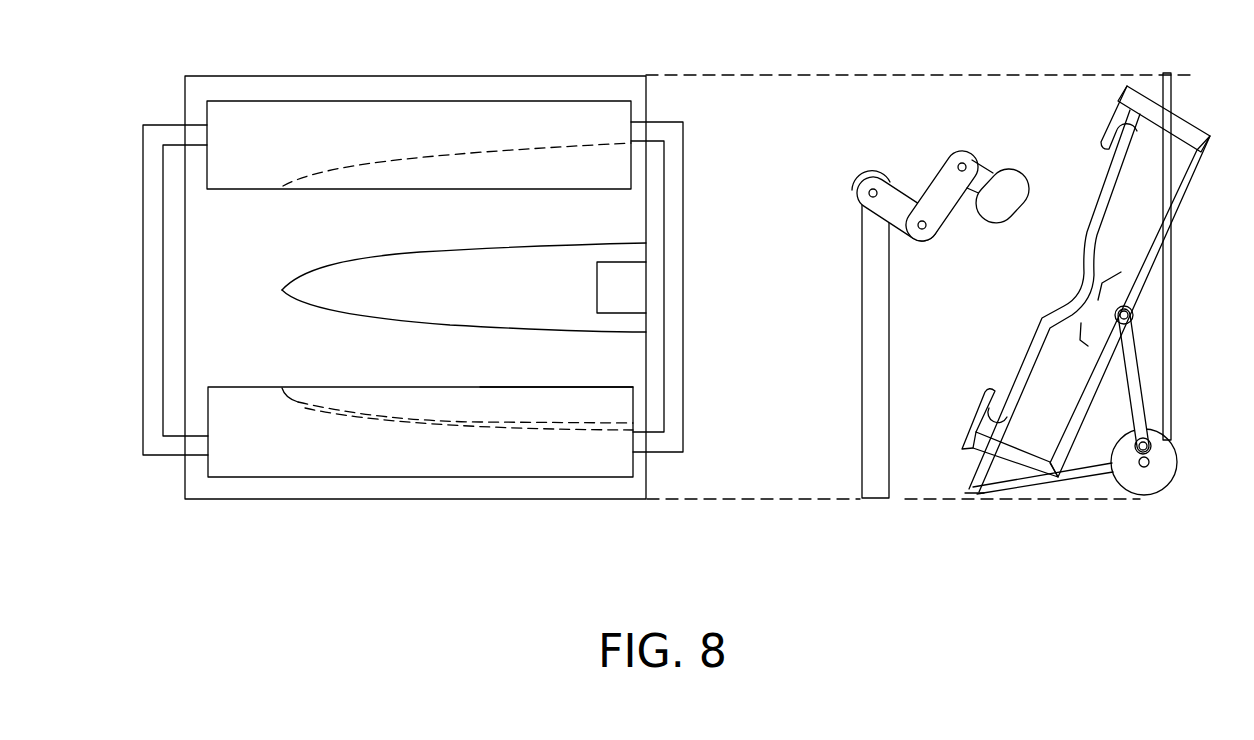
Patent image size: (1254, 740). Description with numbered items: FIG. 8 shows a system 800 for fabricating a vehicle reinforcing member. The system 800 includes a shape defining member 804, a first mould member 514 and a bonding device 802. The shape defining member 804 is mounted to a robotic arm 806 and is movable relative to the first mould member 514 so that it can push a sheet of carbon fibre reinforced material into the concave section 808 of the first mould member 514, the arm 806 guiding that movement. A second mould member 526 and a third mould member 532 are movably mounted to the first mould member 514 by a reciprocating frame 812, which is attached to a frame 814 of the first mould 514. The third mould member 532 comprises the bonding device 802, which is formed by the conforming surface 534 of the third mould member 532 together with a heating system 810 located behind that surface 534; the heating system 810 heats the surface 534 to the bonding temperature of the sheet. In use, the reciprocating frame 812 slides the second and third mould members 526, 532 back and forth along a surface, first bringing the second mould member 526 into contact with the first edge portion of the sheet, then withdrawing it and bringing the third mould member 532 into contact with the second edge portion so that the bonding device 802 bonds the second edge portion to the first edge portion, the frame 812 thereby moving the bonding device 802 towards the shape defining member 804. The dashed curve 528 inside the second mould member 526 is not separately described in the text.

The system 800 is at (689, 65).
The bonding device 802 is at (565, 441).
The shape defining member 804 is at (1006, 173).
The robotic arm 806 is at (869, 296).
The concave section 808 is at (483, 297).
The heating system 810 is at (497, 427).
The reciprocating frame 812 is at (156, 358).
The frame of the first mould 814 is at (1067, 472).
The first mould member 514 is at (292, 362).
The second mould member 526 is at (454, 137).
The dashed curve in upper compartment 528 is at (568, 170).
The third mould member 532 is at (301, 461).
The conforming surface 534 is at (543, 396).